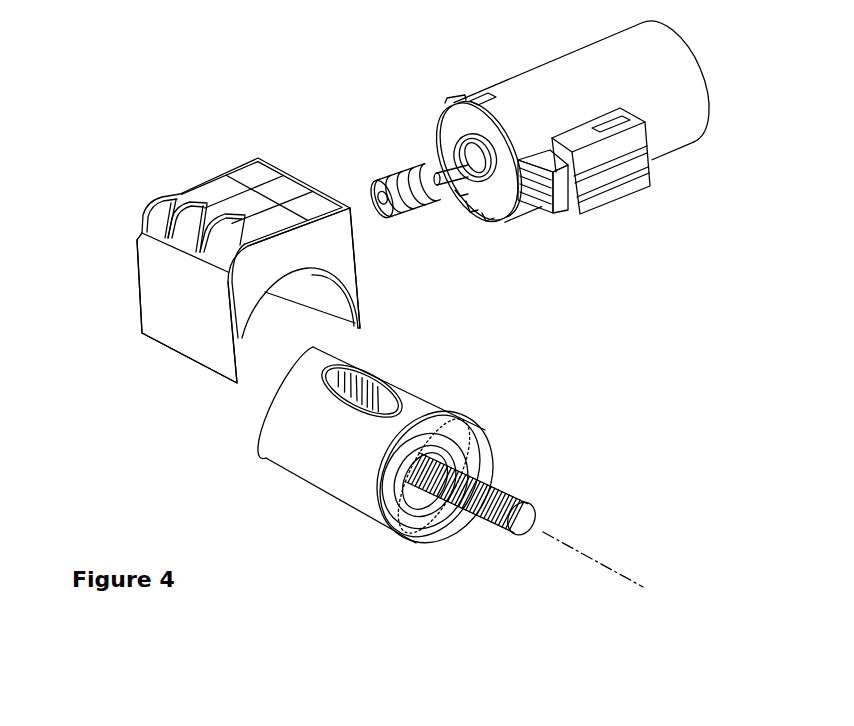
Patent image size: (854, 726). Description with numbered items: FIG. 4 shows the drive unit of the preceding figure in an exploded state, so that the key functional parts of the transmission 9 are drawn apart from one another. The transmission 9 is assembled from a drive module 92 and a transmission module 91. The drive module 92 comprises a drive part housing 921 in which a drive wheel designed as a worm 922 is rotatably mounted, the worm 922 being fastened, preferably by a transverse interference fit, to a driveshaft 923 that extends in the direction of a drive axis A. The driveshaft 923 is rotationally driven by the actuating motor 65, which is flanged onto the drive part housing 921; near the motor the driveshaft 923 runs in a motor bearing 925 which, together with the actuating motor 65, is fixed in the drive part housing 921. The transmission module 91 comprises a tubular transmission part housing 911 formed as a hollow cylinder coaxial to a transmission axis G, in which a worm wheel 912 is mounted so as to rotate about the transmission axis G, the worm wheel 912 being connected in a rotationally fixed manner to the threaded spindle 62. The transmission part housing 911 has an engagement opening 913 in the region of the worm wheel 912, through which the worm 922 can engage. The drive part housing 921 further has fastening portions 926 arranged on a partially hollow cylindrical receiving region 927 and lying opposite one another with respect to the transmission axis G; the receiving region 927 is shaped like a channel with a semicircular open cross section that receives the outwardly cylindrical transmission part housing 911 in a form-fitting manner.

The transmission 9 is at (164, 456).
The transmission module 91 is at (229, 513).
The transmission part housing 911 is at (330, 473).
The worm wheel 912 is at (390, 376).
The engagement opening 913 is at (372, 362).
The drive module 92 is at (104, 347).
The drive part housing 921 is at (150, 243).
The worm 922 is at (400, 167).
The driveshaft 923 is at (447, 167).
The motor bearing 925 is at (475, 182).
The fastening portions 926 is at (362, 322).
The receiving region 927 is at (283, 317).
The threaded spindle 62 is at (513, 492).
The actuating motor 65 is at (670, 70).
The drive axis A is at (365, 210).
The transmission axis G is at (628, 575).